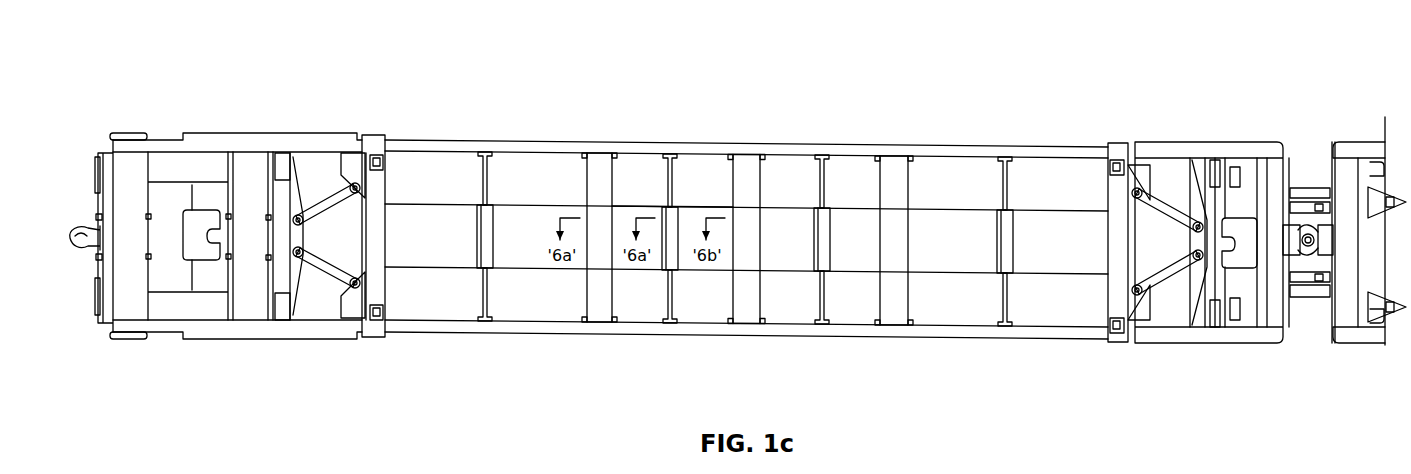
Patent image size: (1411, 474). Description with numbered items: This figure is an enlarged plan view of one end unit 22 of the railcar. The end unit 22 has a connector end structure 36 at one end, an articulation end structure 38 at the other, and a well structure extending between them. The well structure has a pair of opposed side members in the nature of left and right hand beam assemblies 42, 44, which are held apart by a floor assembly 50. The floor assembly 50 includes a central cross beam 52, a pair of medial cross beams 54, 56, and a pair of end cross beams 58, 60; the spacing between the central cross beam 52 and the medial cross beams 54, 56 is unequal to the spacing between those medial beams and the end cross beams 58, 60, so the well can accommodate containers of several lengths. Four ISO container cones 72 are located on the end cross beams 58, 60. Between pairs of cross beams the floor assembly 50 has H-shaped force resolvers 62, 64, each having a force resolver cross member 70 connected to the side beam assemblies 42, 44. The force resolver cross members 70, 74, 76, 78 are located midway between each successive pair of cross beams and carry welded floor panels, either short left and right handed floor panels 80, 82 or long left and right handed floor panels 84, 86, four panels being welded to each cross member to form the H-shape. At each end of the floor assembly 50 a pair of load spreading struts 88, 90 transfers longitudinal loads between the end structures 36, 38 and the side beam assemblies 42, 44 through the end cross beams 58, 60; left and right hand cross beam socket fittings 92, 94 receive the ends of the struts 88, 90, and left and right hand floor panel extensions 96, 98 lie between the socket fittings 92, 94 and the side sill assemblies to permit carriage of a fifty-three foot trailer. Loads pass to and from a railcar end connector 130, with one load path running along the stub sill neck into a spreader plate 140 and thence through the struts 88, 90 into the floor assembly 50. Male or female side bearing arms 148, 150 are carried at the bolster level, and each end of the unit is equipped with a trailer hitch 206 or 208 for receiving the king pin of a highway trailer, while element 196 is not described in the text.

The end unit 22 is at (405, 132).
The connector end structure 36 is at (198, 130).
The articulation end structure 38 is at (1152, 138).
The left hand beam assembly 42 is at (512, 134).
The right hand beam assembly 44 is at (556, 338).
The floor assembly 50 is at (697, 163).
The central cross beam 52 is at (749, 305).
The medial cross beam 54 is at (598, 160).
The medial cross beam 56 is at (893, 166).
The end cross beam 58 is at (373, 182).
The end cross beam 60 is at (1103, 206).
The H-shaped force resolver 62 is at (948, 175).
The H-shaped force resolver 64 is at (571, 170).
The force resolver cross member 70 is at (665, 227).
The ISO 40' container cones 72 is at (395, 165).
The force resolver cross member 74 is at (811, 227).
The force resolver cross member 76 is at (474, 241).
The force resolver cross member 78 is at (995, 254).
The left handed short floor panel 80 is at (715, 163).
The right handed short floor panel 82 is at (650, 162).
The left handed long floor panel 84 is at (552, 168).
The right handed long floor panel 86 is at (458, 160).
The load spreading strut 88 is at (325, 276).
The load spreading strut 90 is at (325, 192).
The left hand cross beam socket fitting 92 is at (1139, 302).
The right hand cross beam socket fitting 94 is at (1142, 188).
The left hand floor panel extension 96 is at (350, 312).
The right hand floor panel extension 98 is at (349, 158).
The railcar end connector 130 is at (79, 214).
The spreader plate 140 is at (293, 199).
The male side bearing arm 148 is at (1295, 195).
The female side bearing arm 150 is at (1318, 185).
The draft sill 196 is at (165, 187).
The trailer hitch 206 is at (186, 264).
The trailer hitch 208 is at (1240, 208).